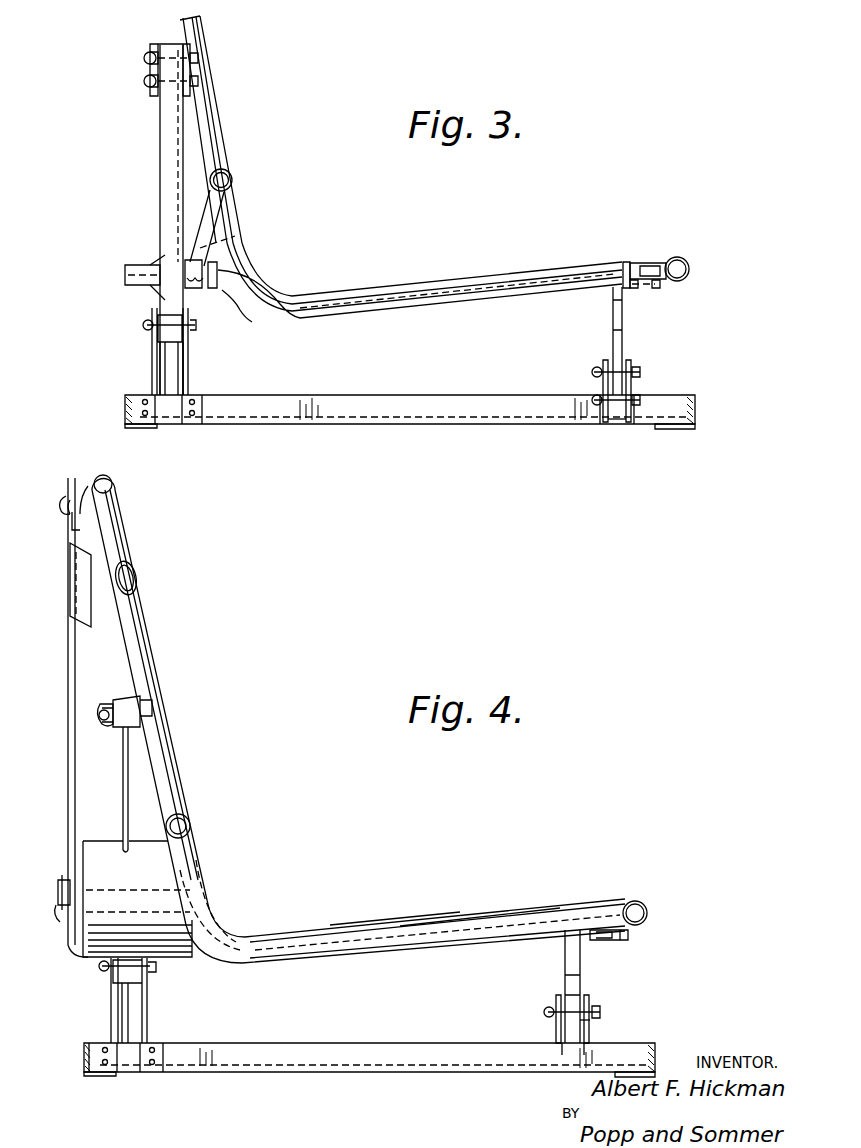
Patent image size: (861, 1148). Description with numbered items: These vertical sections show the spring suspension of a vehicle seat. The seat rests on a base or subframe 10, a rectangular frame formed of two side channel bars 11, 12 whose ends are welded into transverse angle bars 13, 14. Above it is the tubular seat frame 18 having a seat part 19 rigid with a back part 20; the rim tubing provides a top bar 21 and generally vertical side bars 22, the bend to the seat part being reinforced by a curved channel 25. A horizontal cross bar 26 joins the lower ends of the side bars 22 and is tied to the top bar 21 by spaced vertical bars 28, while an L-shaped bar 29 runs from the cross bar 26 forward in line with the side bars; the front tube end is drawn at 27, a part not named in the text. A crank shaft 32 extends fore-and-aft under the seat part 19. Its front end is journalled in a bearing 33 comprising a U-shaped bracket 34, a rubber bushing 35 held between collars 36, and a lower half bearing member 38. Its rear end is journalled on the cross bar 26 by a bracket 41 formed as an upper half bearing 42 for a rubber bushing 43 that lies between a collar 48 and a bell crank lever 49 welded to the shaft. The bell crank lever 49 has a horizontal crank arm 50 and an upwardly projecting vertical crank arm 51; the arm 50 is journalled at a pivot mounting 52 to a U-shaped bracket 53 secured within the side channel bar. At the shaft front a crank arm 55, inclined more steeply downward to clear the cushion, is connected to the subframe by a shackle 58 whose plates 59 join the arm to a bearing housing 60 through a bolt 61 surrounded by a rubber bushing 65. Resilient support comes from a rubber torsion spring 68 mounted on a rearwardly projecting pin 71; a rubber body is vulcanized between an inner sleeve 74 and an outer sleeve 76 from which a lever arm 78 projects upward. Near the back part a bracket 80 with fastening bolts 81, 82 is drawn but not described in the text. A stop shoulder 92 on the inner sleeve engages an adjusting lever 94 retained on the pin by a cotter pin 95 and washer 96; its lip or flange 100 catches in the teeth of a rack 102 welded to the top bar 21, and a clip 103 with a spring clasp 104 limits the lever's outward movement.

In FIG. 3, the base or subframe 10 is at (415, 435).
In FIG. 4, the base or subframe 10 is at (227, 1085).
In FIG. 4, the side channel bar 11 is at (402, 1043).
In FIG. 3, the side channel bar 12 is at (490, 395).
In FIG. 4, the side channel bar 12 is at (126, 1057).
In FIG. 3, the transverse angle bar 13 is at (696, 406).
In FIG. 4, the transverse angle bar 13 is at (655, 1042).
In FIG. 3, the transverse angle bar 14 is at (146, 430).
In FIG. 4, the transverse angle bar 14 is at (86, 1078).
In FIG. 3, the seat frame 18 is at (697, 274).
In FIG. 4, the seat frame 18 is at (184, 764).
In FIG. 3, the seat part 19 is at (519, 263).
In FIG. 4, the seat part 19 is at (512, 911).
In FIG. 3, the back part 20 is at (210, 33).
In FIG. 4, the back part 20 is at (157, 626).
In FIG. 4, the top bar 21 is at (104, 474).
In FIG. 4, the side bar 22 is at (122, 526).
In FIG. 4, the curved channel 25 is at (320, 928).
In FIG. 3, the cross bar 26 is at (233, 178).
In FIG. 4, the cross bar 26 is at (191, 822).
In FIG. 3, the front tube 27 is at (688, 259).
In FIG. 4, the front tube 27 is at (648, 912).
In FIG. 3, the vertical bar 28 is at (222, 127).
In FIG. 4, the vertical bar 28 is at (157, 654).
In FIG. 3, the L-shaped bar 29 is at (385, 280).
In FIG. 4, the L-shaped bar 29 is at (420, 944).
In FIG. 3, the crank shaft 32 is at (392, 308).
In FIG. 3, the bearing 33 is at (647, 256).
In FIG. 4, the bearing 33 is at (632, 941).
In FIG. 3, the U-shaped bracket 34 is at (656, 266).
In FIG. 3, the rubber bushing 35 is at (652, 290).
In FIG. 3, the collar 36 is at (634, 288).
In FIG. 3, the lower half bearing member 38 is at (627, 262).
In FIG. 4, the lower half bearing member 38 is at (600, 940).
In FIG. 3, the bracket 41 is at (225, 205).
In FIG. 3, the upper half bearing 42 is at (236, 236).
In FIG. 3, the rubber bushing 43 is at (218, 263).
In FIG. 3, the collar 48 is at (246, 312).
In FIG. 3, the bell crank lever 49 is at (155, 177).
In FIG. 3, the horizontal crank arm 50 is at (186, 345).
In FIG. 4, the horizontal crank arm 50 is at (118, 994).
In FIG. 3, the vertical crank arm 51 is at (162, 192).
In FIG. 3, the pivot mounting 52 is at (141, 328).
In FIG. 4, the pivot mounting 52 is at (95, 974).
In FIG. 3, the bracket 53 is at (160, 352).
In FIG. 4, the bracket 53 is at (122, 1018).
In FIG. 3, the crank arm 55 is at (612, 322).
In FIG. 4, the crank arm 55 is at (566, 970).
In FIG. 3, the shackle 58 is at (604, 420).
In FIG. 4, the shackle 58 is at (588, 998).
In FIG. 3, the plate 59 is at (603, 362).
In FIG. 4, the plate 59 is at (558, 1002).
In FIG. 3, the bearing housing 60 is at (614, 428).
In FIG. 4, the bearing housing 60 is at (574, 1050).
In FIG. 3, the bolt 61 is at (594, 386).
In FIG. 4, the bolt 61 is at (546, 1014).
In FIG. 3, the rubber bushing 65 is at (642, 388).
In FIG. 4, the rubber bushing 65 is at (592, 1006).
In FIG. 4, the rubber torsion spring 68 is at (150, 846).
In FIG. 4, the pin 71 is at (56, 918).
In FIG. 4, the sleeve 74 is at (86, 898).
In FIG. 4, the outer sleeve 76 is at (137, 899).
In FIG. 4, the lever arm 78 is at (124, 800).
In FIG. 3, the bracket 80 is at (185, 44).
In FIG. 4, the bracket 80 is at (110, 726).
In FIG. 3, the bolt 81 is at (144, 82).
In FIG. 3, the bolt 82 is at (144, 58).
In FIG. 4, the bolt 82 is at (106, 706).
In FIG. 4, the stop shoulder 92 is at (190, 928).
In FIG. 4, the adjusting lever 94 is at (68, 710).
In FIG. 4, the cotter pin 95 is at (62, 884).
In FIG. 4, the washer 96 is at (72, 940).
In FIG. 4, the lip or flange 100 is at (88, 624).
In FIG. 4, the rack 102 is at (115, 512).
In FIG. 4, the clip 103 is at (90, 474).
In FIG. 4, the spring clasp 104 is at (64, 496).